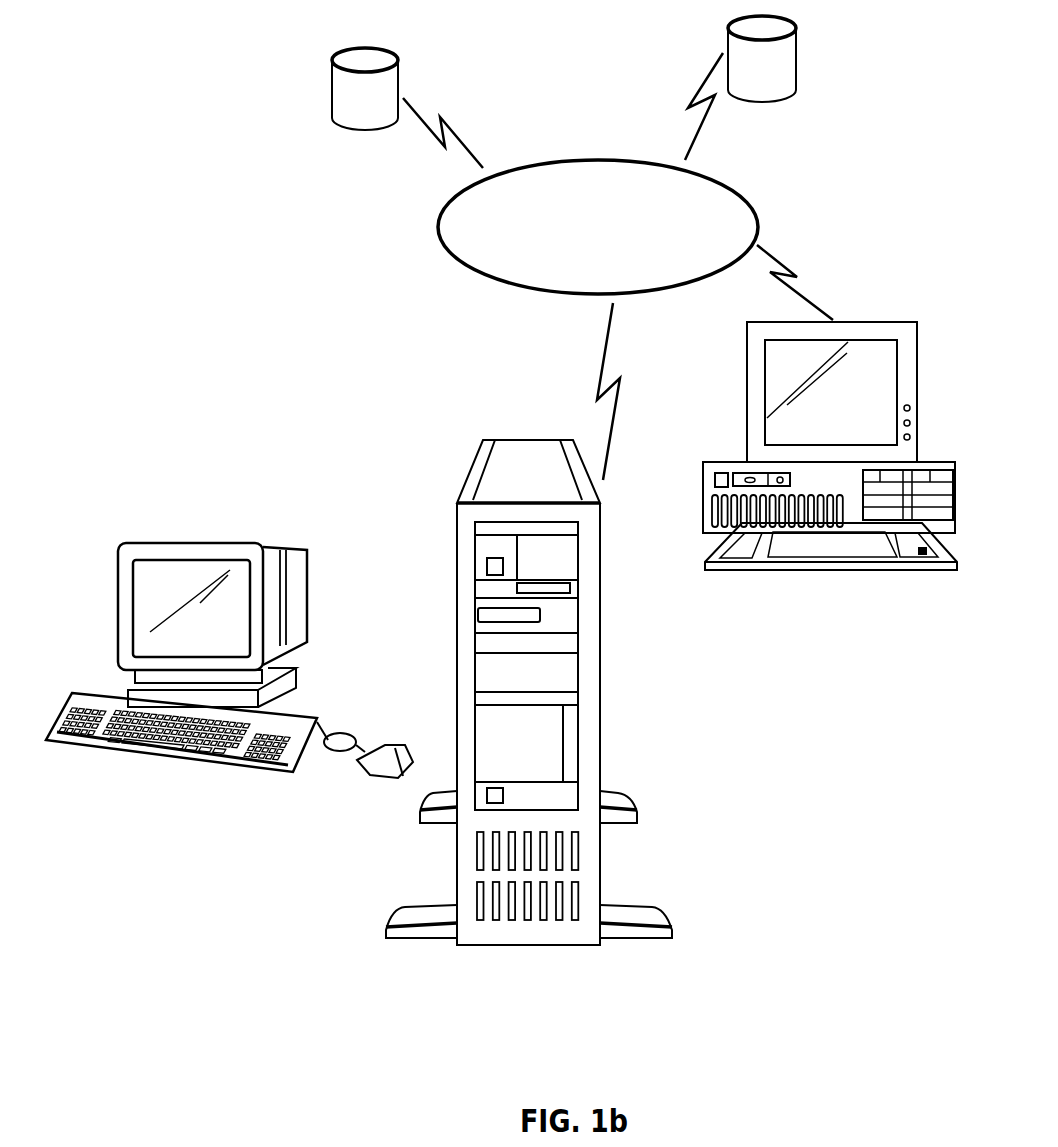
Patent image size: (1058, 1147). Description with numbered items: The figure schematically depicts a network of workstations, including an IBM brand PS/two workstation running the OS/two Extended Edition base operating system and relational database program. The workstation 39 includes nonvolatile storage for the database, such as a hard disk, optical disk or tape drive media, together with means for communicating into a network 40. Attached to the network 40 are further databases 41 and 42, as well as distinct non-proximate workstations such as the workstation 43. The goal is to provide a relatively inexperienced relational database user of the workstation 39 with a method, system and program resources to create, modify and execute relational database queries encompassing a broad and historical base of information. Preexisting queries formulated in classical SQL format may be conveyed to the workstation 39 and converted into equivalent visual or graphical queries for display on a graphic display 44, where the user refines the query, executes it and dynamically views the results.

The workstation 39 is at (371, 474).
The network 40 is at (694, 247).
The database 41 is at (352, 109).
The database 42 is at (749, 75).
The workstation 43 is at (855, 570).
The graphic display 44 is at (182, 572).